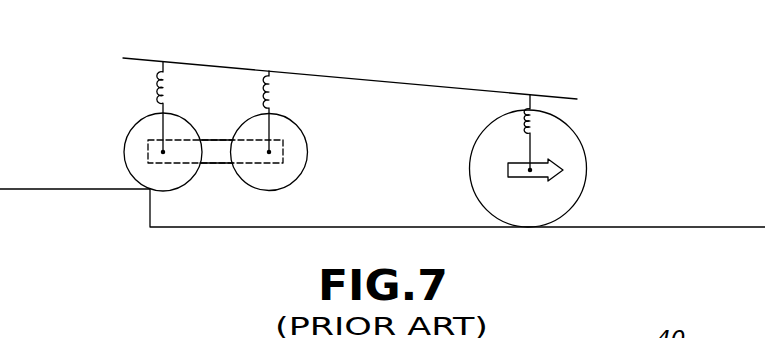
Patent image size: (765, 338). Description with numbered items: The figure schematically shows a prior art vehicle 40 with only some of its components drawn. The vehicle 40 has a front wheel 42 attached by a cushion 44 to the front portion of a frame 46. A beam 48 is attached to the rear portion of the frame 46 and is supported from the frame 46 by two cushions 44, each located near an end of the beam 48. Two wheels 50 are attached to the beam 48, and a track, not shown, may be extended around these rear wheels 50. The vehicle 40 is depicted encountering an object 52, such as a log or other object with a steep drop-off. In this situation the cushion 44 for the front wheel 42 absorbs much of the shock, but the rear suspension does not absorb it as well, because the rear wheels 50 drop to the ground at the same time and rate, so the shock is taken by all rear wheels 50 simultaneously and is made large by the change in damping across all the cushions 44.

The prior art vehicle 40 is at (567, 77).
The front wheel 42 is at (588, 168).
The cushion 44 is at (153, 88).
The frame 46 is at (428, 85).
The beam 48 is at (215, 163).
The wheels 50 is at (140, 126).
The object 52 is at (150, 207).